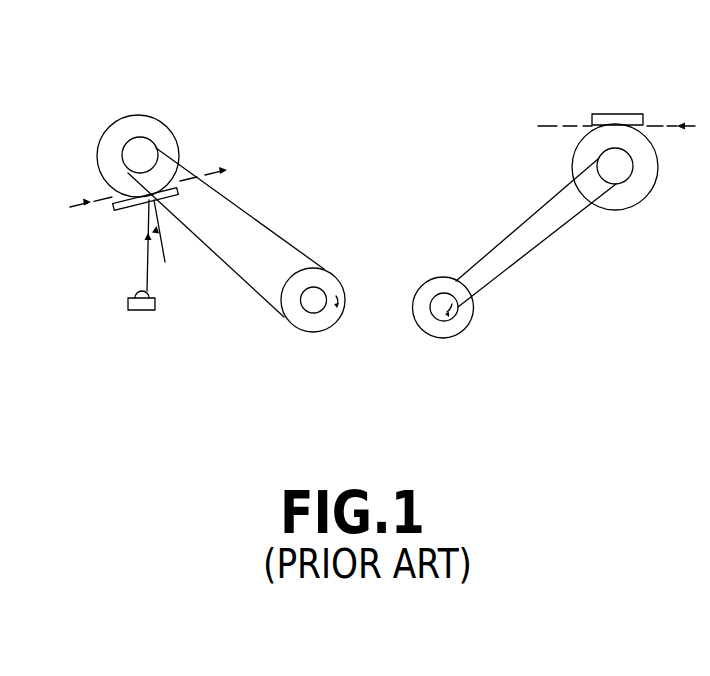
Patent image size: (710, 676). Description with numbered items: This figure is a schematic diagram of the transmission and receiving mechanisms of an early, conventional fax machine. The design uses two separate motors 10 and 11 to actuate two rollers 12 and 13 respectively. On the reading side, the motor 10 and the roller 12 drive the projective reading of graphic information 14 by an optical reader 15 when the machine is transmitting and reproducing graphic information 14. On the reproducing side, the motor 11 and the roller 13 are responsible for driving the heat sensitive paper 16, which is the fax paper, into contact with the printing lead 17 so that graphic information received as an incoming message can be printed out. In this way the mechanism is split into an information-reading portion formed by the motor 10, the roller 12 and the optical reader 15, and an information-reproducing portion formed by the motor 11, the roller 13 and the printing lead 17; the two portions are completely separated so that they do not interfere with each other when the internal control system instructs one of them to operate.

The motor 10 is at (307, 323).
The motor 11 is at (445, 332).
The roller 12 is at (155, 132).
The roller 13 is at (580, 158).
The graphic information 14 is at (232, 171).
The optical reader 15 is at (123, 220).
The heat sensitive paper 16 is at (547, 125).
The printing lead 17 is at (617, 113).